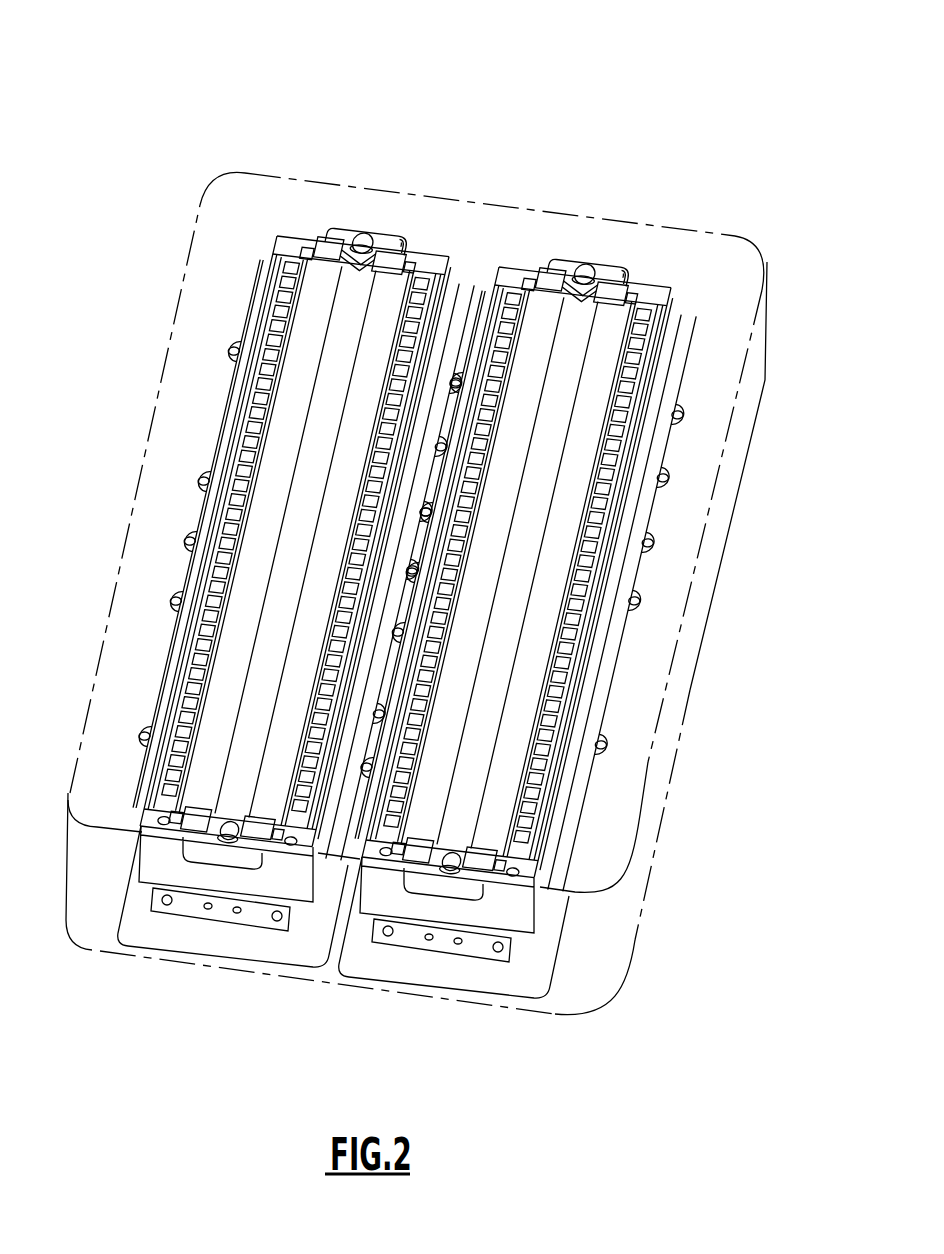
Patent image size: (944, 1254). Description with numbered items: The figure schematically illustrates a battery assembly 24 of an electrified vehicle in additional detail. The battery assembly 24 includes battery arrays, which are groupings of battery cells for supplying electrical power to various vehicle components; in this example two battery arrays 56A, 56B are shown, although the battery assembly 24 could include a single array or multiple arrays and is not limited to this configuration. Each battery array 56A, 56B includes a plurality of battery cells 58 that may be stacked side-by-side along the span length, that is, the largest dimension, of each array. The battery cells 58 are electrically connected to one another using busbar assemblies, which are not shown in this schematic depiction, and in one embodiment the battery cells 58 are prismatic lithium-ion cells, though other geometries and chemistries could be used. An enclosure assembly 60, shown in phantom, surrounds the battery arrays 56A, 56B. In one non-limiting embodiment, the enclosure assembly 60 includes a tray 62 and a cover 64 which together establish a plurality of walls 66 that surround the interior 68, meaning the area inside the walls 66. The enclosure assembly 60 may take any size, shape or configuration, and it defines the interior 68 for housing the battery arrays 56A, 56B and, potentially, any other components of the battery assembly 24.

The battery assembly 24 is at (504, 120).
The battery array 56A is at (603, 262).
The battery array 56B is at (385, 235).
The battery cells 58 is at (522, 282).
The enclosure assembly 60 is at (778, 250).
The tray 62 is at (714, 541).
The cover 64 is at (700, 432).
The walls 66 is at (333, 196).
The interior 68 is at (685, 268).